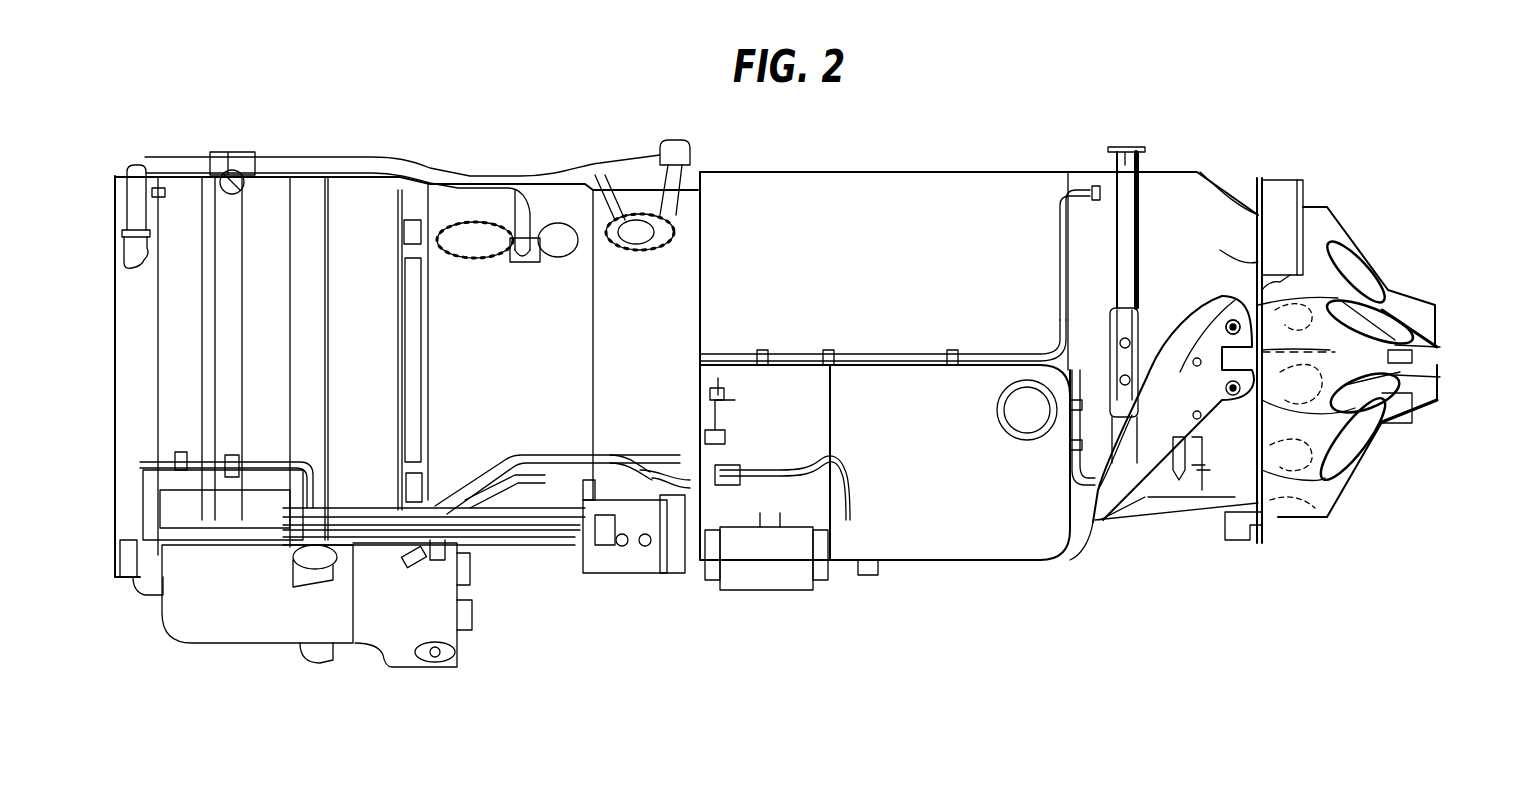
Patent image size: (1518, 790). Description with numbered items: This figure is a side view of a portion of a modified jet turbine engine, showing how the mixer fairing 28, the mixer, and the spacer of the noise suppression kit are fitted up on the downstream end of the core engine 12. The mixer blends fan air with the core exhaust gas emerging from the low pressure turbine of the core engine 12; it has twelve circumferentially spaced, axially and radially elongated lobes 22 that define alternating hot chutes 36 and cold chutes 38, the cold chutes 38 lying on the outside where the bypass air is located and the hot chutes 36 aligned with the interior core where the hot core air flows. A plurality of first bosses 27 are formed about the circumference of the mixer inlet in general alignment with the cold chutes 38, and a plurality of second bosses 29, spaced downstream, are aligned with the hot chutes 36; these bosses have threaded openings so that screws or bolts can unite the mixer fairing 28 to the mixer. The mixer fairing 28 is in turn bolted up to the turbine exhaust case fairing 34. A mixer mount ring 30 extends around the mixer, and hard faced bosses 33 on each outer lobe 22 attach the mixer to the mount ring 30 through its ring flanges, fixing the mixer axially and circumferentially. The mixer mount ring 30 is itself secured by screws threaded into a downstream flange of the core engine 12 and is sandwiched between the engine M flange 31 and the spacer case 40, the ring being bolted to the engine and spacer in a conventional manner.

The core engine 12 is at (886, 578).
The lobes 22 is at (1317, 403).
The first bosses 27 is at (1195, 358).
The mixer fairing 28 is at (1170, 420).
The second bosses 29 is at (1226, 322).
The mixer mount ring 30 is at (1258, 217).
The engine M flange 31 is at (1253, 260).
The hard faced bosses 33 is at (1250, 512).
The turbine exhaust case fairing 34 is at (1113, 497).
The hot chutes 36 is at (1367, 278).
The cold chutes 38 is at (1472, 370).
The spacer case 40 is at (1283, 200).